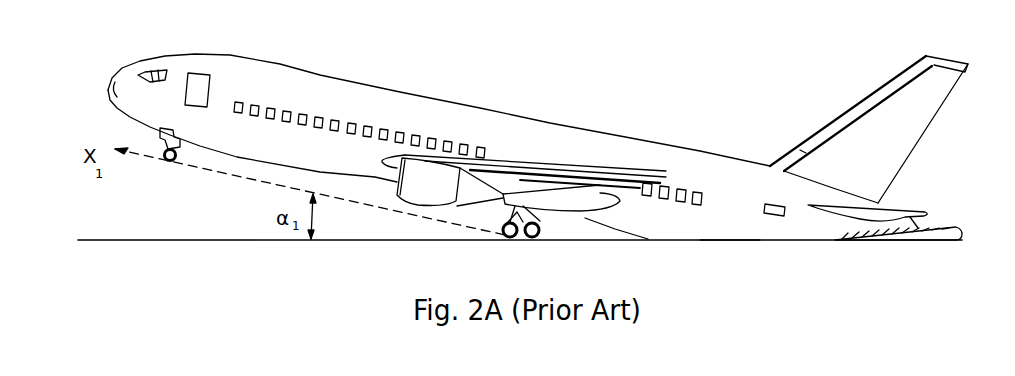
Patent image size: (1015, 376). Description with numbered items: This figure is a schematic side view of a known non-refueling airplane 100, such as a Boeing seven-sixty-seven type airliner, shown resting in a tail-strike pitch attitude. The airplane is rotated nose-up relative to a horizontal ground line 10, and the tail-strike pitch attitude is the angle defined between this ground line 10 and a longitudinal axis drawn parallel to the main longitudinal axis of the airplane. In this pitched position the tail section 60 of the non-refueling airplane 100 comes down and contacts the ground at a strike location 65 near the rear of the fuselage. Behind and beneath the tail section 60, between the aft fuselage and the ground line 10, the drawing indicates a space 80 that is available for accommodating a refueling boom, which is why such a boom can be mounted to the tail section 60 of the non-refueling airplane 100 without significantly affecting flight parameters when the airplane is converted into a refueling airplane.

The ground line 10 is at (188, 241).
The tail section 60 is at (805, 228).
The strike location 65 is at (748, 239).
The space 80 is at (952, 240).
The non-refueling airplane 100 is at (775, 89).